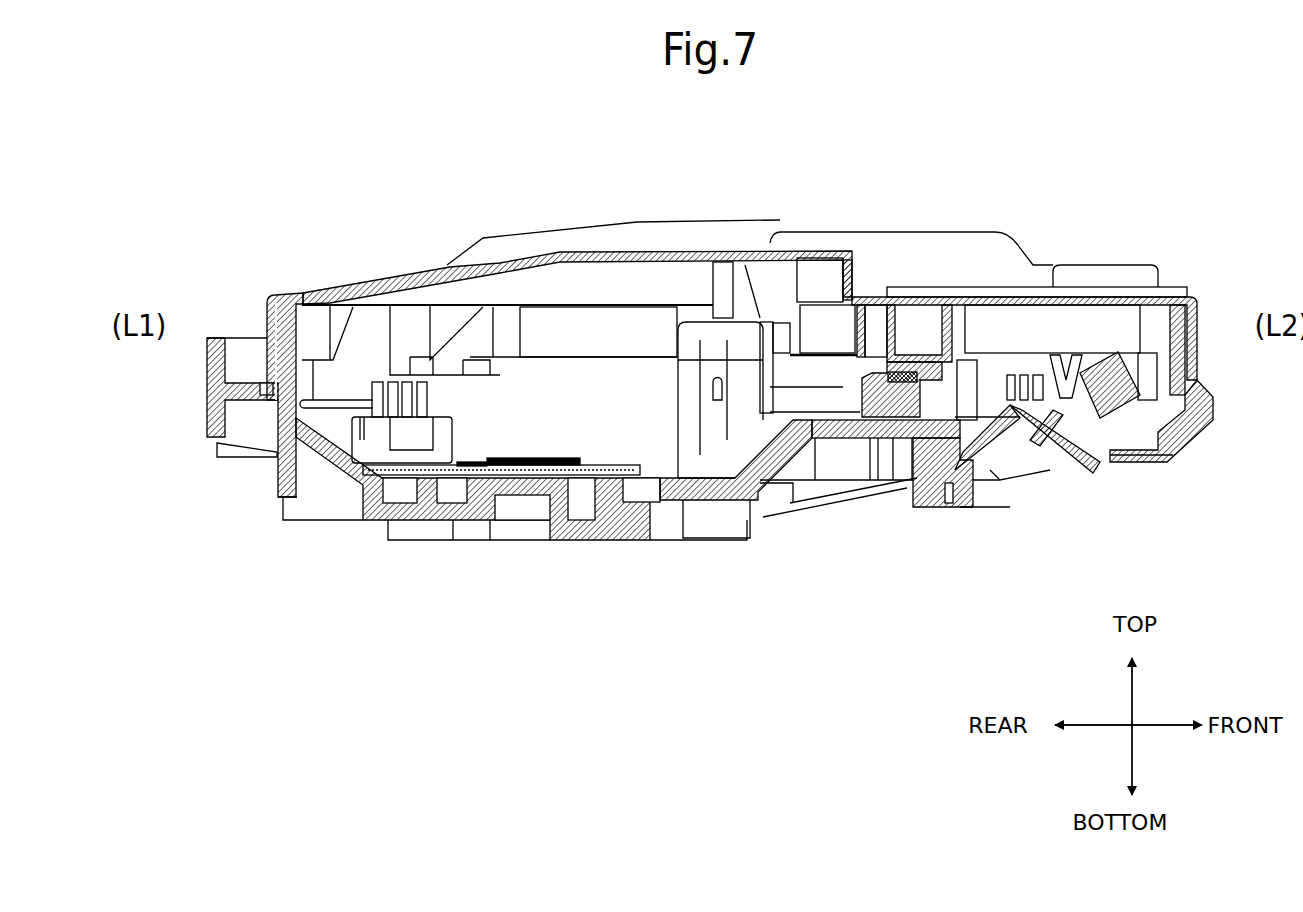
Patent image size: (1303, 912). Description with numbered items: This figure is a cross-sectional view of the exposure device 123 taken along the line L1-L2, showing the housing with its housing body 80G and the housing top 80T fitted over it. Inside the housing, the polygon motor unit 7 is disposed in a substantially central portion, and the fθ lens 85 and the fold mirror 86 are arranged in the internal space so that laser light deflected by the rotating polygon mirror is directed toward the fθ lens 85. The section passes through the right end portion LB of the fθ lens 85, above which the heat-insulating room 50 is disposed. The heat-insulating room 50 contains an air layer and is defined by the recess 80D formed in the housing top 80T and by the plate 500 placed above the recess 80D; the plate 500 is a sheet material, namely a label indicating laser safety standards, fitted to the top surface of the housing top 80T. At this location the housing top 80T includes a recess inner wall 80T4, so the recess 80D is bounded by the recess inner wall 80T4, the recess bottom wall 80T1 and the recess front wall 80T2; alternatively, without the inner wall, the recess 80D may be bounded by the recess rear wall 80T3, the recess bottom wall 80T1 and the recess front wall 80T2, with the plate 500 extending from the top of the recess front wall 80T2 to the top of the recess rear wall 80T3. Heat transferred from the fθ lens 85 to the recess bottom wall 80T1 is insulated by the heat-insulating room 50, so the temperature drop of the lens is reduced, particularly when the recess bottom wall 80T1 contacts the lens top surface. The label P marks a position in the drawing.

The exposure device 123 is at (287, 243).
The recording medium P is at (576, 330).
The polygon motor unit 7 is at (452, 465).
The recess rear wall 80T3 is at (857, 332).
The recess inner wall 80T4 is at (872, 300).
The heat-insulating room 50 is at (912, 326).
The recess 80D is at (925, 323).
The plate 500 is at (1053, 288).
The housing top 80T is at (1138, 265).
The recess bottom wall 80T1 is at (922, 405).
The recess front wall 80T2 is at (960, 330).
The fθ lens 85 is at (900, 407).
The fold mirror 86 is at (1065, 400).
The housing body 80G is at (1155, 462).